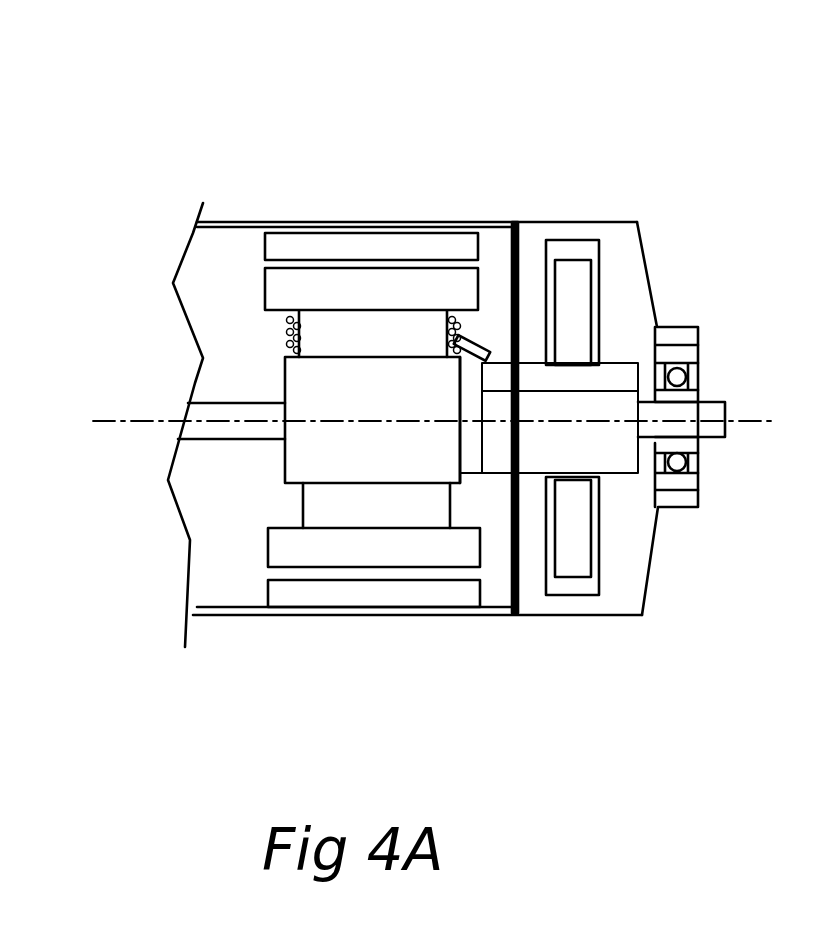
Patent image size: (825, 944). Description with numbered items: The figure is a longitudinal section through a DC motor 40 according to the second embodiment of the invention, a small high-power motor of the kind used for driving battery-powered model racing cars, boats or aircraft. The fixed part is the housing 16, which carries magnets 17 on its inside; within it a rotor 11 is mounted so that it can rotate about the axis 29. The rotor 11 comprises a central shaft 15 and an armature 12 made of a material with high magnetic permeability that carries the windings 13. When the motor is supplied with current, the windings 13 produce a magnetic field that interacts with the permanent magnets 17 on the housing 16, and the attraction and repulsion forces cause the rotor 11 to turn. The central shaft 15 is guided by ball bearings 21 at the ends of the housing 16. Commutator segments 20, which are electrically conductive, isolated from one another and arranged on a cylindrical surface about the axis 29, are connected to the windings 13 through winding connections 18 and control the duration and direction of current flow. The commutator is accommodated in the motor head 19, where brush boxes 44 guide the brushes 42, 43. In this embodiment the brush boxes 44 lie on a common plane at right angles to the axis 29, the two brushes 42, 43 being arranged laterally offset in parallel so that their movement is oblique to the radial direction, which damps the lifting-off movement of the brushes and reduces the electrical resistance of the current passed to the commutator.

The rotor 11 is at (293, 460).
The armature 12 is at (420, 560).
The windings 13 is at (283, 335).
The central shaft 15 is at (708, 410).
The housing 16 is at (335, 222).
The magnets 17 is at (337, 600).
The winding connections 18 is at (492, 347).
The motor head 19 is at (582, 222).
The commutator segments 20 is at (527, 453).
The ball bearings 21 is at (680, 462).
The axis 29 is at (137, 421).
The DC motor 40 is at (398, 165).
The brush 42 is at (572, 305).
The brush 43 is at (577, 557).
The brush boxes 44 is at (597, 240).